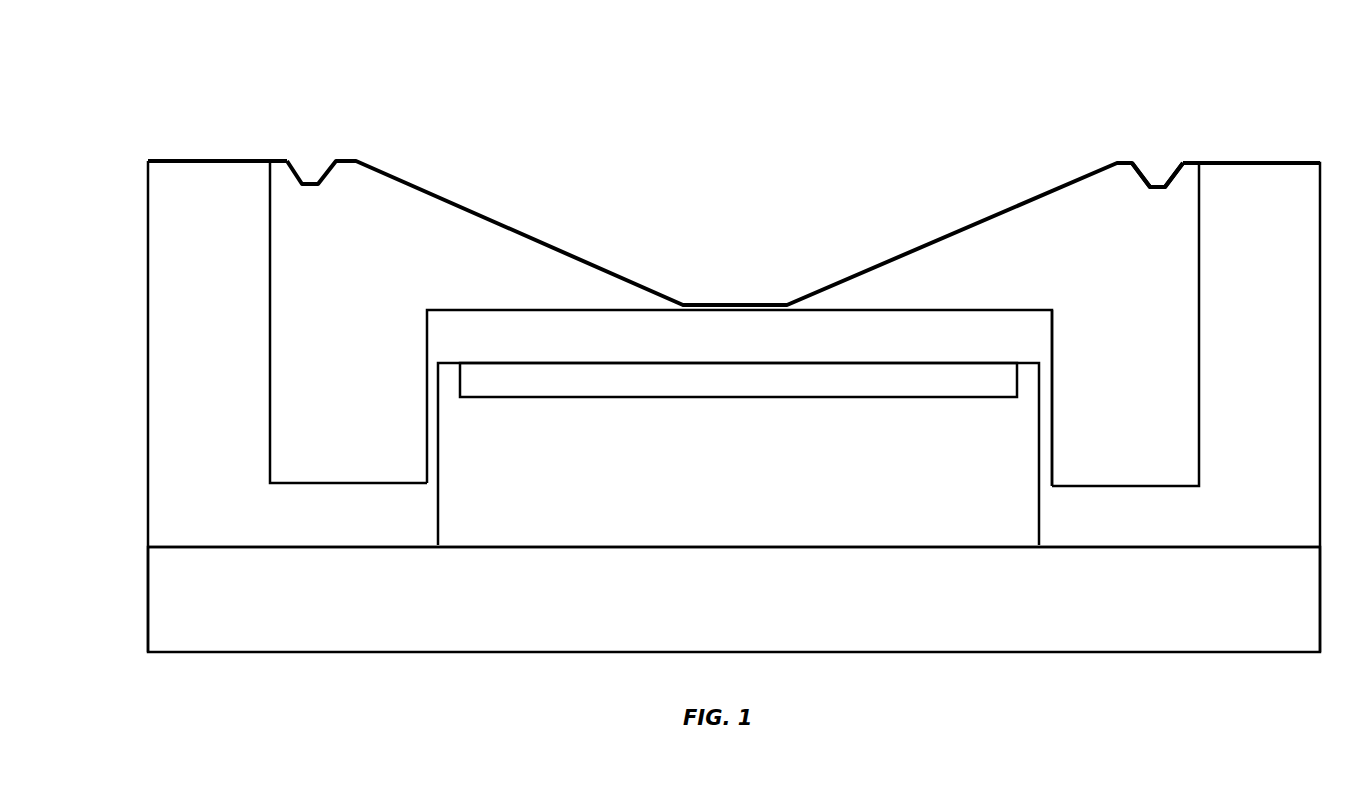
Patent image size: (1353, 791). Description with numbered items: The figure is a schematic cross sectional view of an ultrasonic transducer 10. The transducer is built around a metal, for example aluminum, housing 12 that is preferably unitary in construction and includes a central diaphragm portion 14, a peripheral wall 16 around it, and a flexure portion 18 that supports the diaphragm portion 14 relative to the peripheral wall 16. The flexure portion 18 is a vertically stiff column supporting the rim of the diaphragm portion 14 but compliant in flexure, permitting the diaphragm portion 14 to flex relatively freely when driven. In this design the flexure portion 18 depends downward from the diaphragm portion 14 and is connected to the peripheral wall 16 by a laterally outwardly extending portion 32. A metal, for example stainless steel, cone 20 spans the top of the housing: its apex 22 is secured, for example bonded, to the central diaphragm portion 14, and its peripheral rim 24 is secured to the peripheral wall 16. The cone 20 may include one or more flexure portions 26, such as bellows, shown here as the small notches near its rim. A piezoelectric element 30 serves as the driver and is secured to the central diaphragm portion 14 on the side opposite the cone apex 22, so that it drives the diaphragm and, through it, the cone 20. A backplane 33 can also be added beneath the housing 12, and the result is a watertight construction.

The ultrasonic transducer 10 is at (672, 98).
The housing 12 is at (957, 486).
The central diaphragm portion 14 is at (910, 349).
The peripheral wall 16 is at (220, 332).
The flexure portion 18 is at (1065, 401).
The cone 20 is at (1120, 150).
The apex 22 is at (738, 304).
The peripheral rim 24 is at (1240, 163).
The flexure portion 26 is at (1158, 150).
The piezoelectric element 30 is at (732, 380).
The laterally outwardly extending portion 32 is at (1165, 526).
The backplane 33 is at (1020, 618).